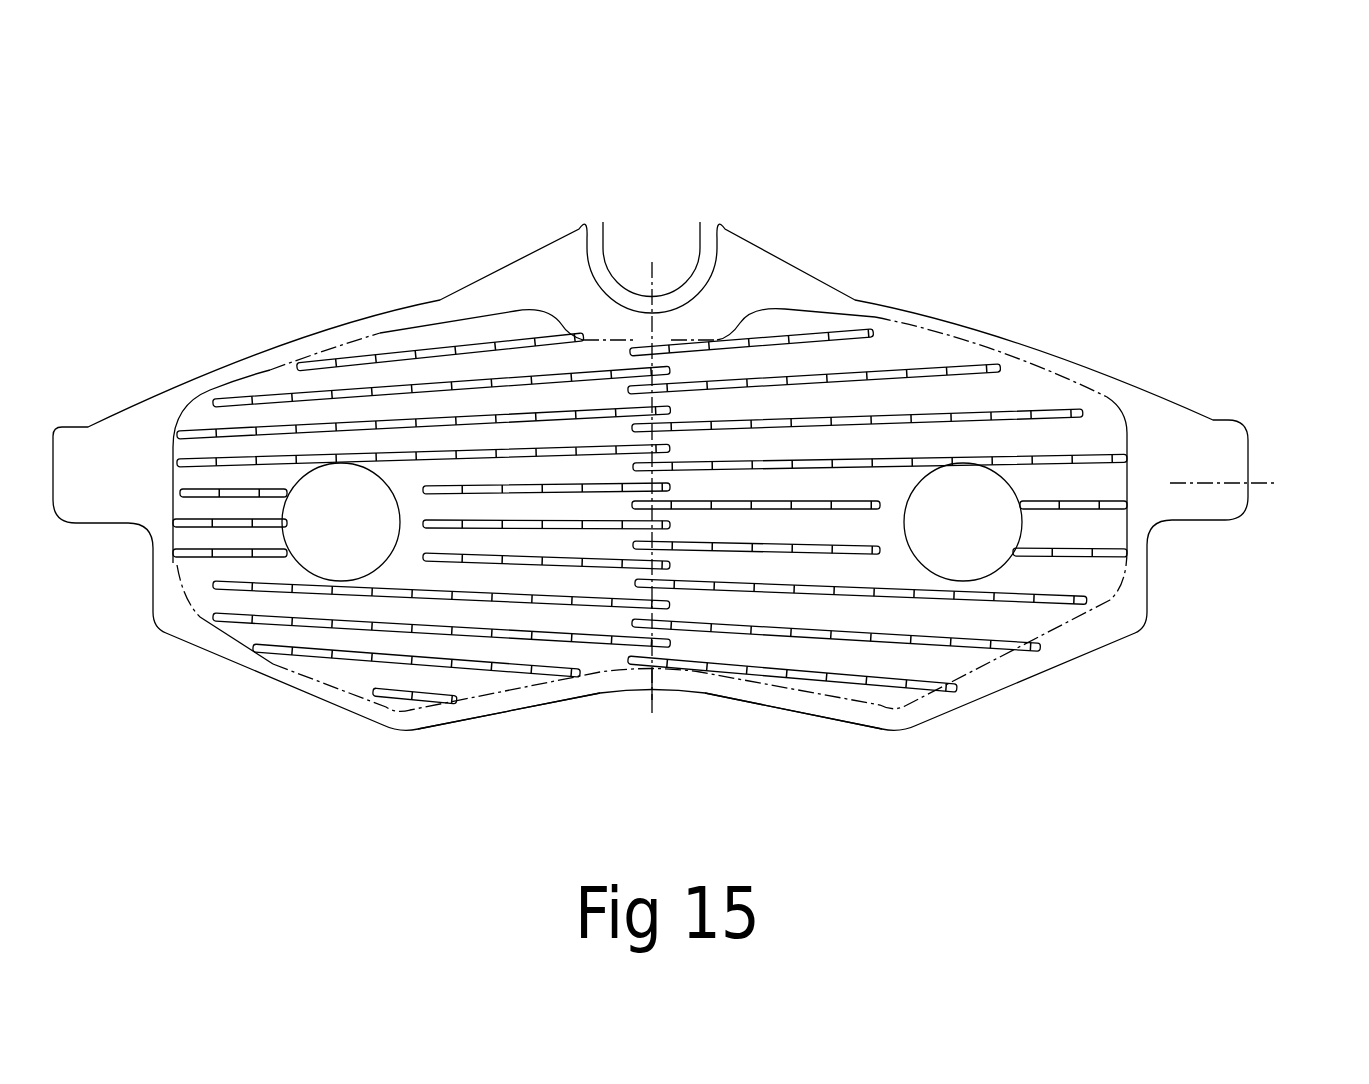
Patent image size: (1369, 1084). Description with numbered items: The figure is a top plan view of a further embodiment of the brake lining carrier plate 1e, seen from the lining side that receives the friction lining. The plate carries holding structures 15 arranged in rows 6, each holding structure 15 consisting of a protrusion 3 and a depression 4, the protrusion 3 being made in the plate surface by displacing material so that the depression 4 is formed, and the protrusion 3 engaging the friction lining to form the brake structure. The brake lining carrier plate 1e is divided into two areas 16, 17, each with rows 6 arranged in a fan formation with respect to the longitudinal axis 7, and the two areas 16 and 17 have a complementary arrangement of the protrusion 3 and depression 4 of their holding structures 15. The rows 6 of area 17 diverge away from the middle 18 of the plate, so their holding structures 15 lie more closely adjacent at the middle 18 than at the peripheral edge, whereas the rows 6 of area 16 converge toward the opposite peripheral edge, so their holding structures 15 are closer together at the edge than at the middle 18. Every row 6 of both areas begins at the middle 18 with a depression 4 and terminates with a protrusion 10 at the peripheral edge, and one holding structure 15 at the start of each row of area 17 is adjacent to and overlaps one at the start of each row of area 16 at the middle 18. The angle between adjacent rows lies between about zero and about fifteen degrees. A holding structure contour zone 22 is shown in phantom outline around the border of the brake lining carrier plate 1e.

The brake lining carrier plate 1e is at (914, 298).
The protrusion 3 is at (377, 353).
The depression 4 is at (487, 340).
The holding structure 15 is at (531, 352).
The row 6 is at (1037, 648).
The longitudinal axis 7 is at (1263, 480).
The protrusion 10 is at (250, 653).
The area 16 is at (597, 663).
The area 17 is at (790, 692).
The middle 18 is at (667, 683).
The contour zone 22 is at (1066, 643).